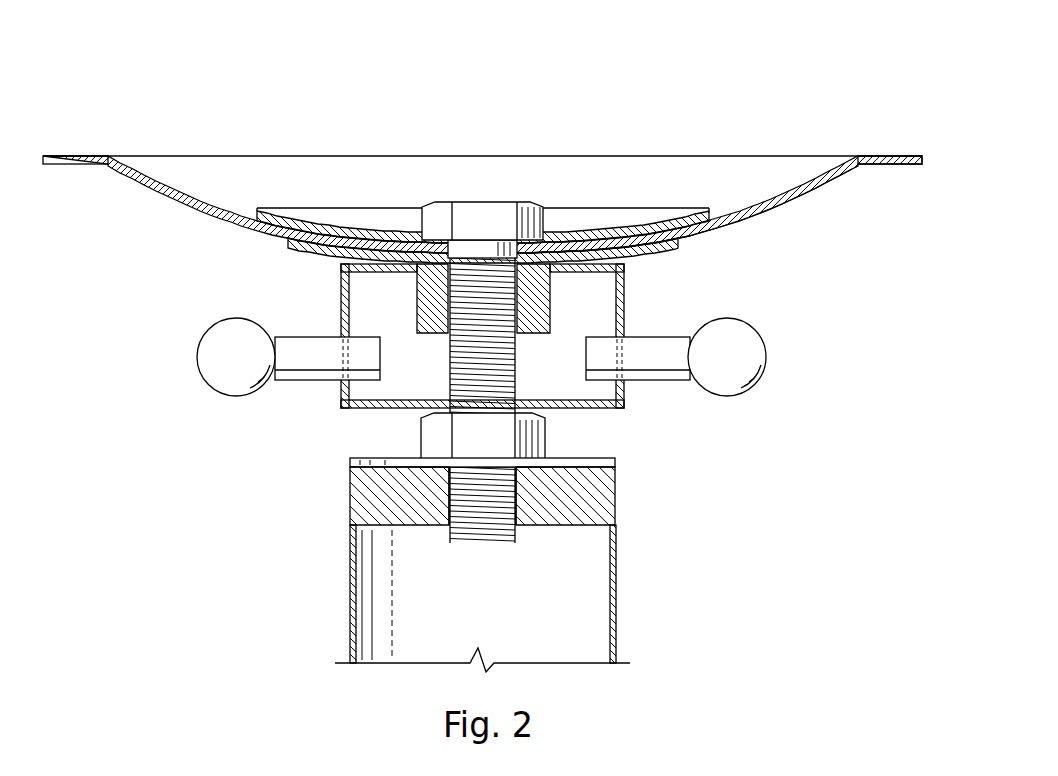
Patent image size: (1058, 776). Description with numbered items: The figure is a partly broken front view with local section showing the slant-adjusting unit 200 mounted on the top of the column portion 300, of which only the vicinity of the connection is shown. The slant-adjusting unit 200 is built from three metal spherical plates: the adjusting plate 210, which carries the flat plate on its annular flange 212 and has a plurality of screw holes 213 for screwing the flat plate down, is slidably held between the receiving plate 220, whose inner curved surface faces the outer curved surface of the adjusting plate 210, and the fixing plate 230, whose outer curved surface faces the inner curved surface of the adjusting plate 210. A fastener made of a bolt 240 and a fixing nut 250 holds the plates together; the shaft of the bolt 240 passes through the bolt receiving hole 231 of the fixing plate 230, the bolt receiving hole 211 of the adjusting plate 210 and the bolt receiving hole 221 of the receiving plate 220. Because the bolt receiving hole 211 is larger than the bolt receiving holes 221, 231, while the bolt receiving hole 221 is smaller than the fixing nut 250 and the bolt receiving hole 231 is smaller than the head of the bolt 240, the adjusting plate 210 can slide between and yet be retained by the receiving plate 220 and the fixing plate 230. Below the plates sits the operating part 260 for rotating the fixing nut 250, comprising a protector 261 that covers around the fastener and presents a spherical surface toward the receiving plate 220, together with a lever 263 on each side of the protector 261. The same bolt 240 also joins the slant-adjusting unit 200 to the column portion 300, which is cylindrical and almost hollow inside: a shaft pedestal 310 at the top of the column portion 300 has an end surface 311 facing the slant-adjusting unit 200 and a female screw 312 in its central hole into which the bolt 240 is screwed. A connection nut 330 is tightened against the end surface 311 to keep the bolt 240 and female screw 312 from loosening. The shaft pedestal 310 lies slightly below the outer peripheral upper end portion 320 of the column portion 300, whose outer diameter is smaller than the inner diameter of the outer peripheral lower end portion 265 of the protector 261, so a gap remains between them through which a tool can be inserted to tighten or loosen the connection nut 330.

The slant-adjusting unit 200 is at (501, 318).
The adjusting plate 210 is at (797, 170).
The bolt receiving hole 211 is at (590, 238).
The flange 212 is at (912, 160).
The screw holes 213 is at (74, 160).
The receiving plate 220 is at (303, 253).
The bolt receiving hole 221 is at (452, 273).
The fixing plate 230 is at (352, 229).
The bolt receiving hole 231 is at (455, 245).
The bolt 240 is at (490, 205).
The fixing nut 250 is at (537, 300).
The operating part 260 is at (553, 362).
The protector 261 is at (624, 335).
The lever 263 is at (207, 360).
The outer peripheral lower end portion 265 is at (593, 410).
The column portion 300 is at (512, 560).
The shaft pedestal 310 is at (420, 512).
The end surface 311 is at (590, 488).
The female screw 312 is at (478, 522).
The outer peripheral upper end portion 320 is at (596, 460).
The connection nut 330 is at (428, 442).